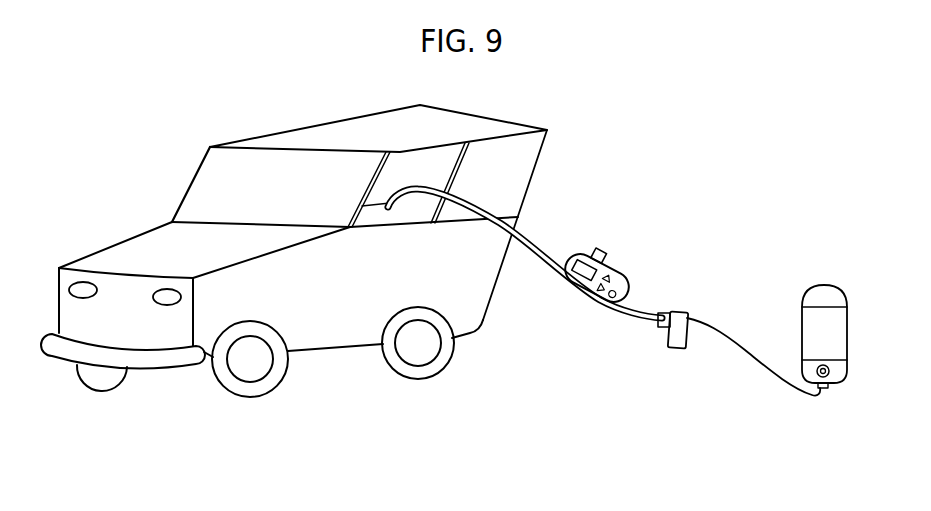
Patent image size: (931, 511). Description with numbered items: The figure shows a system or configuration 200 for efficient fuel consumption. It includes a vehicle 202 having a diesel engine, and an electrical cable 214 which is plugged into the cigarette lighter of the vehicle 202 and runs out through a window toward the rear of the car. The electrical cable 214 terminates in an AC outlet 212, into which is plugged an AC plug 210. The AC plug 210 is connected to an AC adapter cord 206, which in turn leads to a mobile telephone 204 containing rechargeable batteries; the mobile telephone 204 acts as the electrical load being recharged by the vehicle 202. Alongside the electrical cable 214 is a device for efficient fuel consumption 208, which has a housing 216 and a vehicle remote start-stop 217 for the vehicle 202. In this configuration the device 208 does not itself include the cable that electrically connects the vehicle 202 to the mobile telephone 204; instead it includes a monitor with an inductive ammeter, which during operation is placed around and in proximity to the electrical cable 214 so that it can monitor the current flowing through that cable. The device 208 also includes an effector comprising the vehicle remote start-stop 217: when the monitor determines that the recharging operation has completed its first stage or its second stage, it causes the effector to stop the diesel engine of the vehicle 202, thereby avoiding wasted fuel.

The system or configuration 200 is at (752, 174).
The vehicle 202 is at (181, 396).
The mobile telephone 204 is at (847, 330).
The AC adapter cord 206 is at (762, 367).
The device for efficient fuel consumption 208 is at (634, 271).
The AC plug 210 is at (673, 348).
The AC outlet 212 is at (663, 328).
The electrical cable 214 is at (538, 252).
The housing 216 is at (628, 287).
The vehicle remote start-stop 217 is at (607, 252).